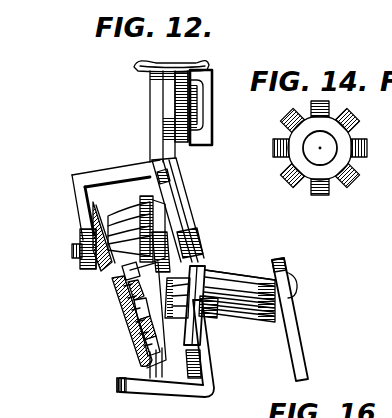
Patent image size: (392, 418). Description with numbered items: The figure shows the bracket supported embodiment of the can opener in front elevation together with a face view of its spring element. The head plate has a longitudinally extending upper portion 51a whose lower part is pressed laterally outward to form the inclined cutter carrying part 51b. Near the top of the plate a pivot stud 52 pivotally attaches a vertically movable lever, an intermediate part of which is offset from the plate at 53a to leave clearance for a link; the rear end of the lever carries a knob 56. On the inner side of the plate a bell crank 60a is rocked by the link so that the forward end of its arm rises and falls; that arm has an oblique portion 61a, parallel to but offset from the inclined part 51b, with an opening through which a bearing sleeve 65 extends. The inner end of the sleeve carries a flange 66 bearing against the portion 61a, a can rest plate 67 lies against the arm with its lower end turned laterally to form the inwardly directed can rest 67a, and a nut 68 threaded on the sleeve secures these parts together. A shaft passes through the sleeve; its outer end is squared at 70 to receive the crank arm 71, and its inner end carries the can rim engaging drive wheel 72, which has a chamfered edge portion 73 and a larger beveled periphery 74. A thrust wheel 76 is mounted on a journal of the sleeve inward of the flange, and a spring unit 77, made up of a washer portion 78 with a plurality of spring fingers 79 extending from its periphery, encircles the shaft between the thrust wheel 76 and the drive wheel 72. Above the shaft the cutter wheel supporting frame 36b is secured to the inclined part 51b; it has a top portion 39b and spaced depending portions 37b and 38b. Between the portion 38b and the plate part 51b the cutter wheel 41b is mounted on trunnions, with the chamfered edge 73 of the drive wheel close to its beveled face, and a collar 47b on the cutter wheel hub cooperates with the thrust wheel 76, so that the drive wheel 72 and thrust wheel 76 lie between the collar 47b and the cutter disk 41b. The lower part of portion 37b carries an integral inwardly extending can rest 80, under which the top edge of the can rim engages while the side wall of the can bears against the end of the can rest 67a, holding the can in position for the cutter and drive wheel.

In FIG. 12, the knob 56 is at (203, 66).
In FIG. 12, the longitudinally extending upper portion 51a is at (162, 95).
In FIG. 12, the bell crank 60a is at (148, 108).
In FIG. 12, the offset portion of the lever 53a is at (214, 108).
In FIG. 12, the pivot stud 52 is at (201, 92).
In FIG. 12, the cutter wheel supporting frame 36b is at (76, 173).
In FIG. 12, the depending portion of the frame 38b is at (73, 200).
In FIG. 12, the top portion of the frame 39b is at (136, 164).
In FIG. 12, the cutter wheel 41b is at (80, 231).
In FIG. 12, the can rest 80 is at (72, 251).
In FIG. 12, the collar 47b is at (143, 196).
In FIG. 12, the depending portion of the frame 37b is at (185, 172).
In FIG. 12, the inclined cutter carrying part 51b is at (192, 194).
In FIG. 12, the washer portion 78 is at (182, 277).
In FIG. 14, the washer portion 78 is at (311, 175).
In FIG. 12, the can rim engaging drive wheel 72 is at (116, 312).
In FIG. 12, the spring fingers 79 is at (148, 349).
In FIG. 14, the spring fingers 79 is at (284, 128).
In FIG. 12, the chamfered edge portion 73 is at (120, 276).
In FIG. 12, the spring unit 77 is at (128, 292).
In FIG. 14, the spring unit 77 is at (378, 114).
In FIG. 12, the beveled periphery portion 74 is at (140, 327).
In FIG. 12, the bearing sleeve 65 is at (258, 266).
In FIG. 12, the nut 68 is at (206, 268).
In FIG. 12, the flange 66 is at (190, 299).
In FIG. 12, the thrust wheel 76 is at (196, 345).
In FIG. 12, the can rest plate 67 is at (210, 367).
In FIG. 12, the can rest 67a is at (117, 384).
In FIG. 12, the oblique portion of the bell crank arm 61a is at (190, 378).
In FIG. 12, the crank arm 71 is at (301, 358).
In FIG. 12, the squared end of the shaft 70 is at (297, 286).